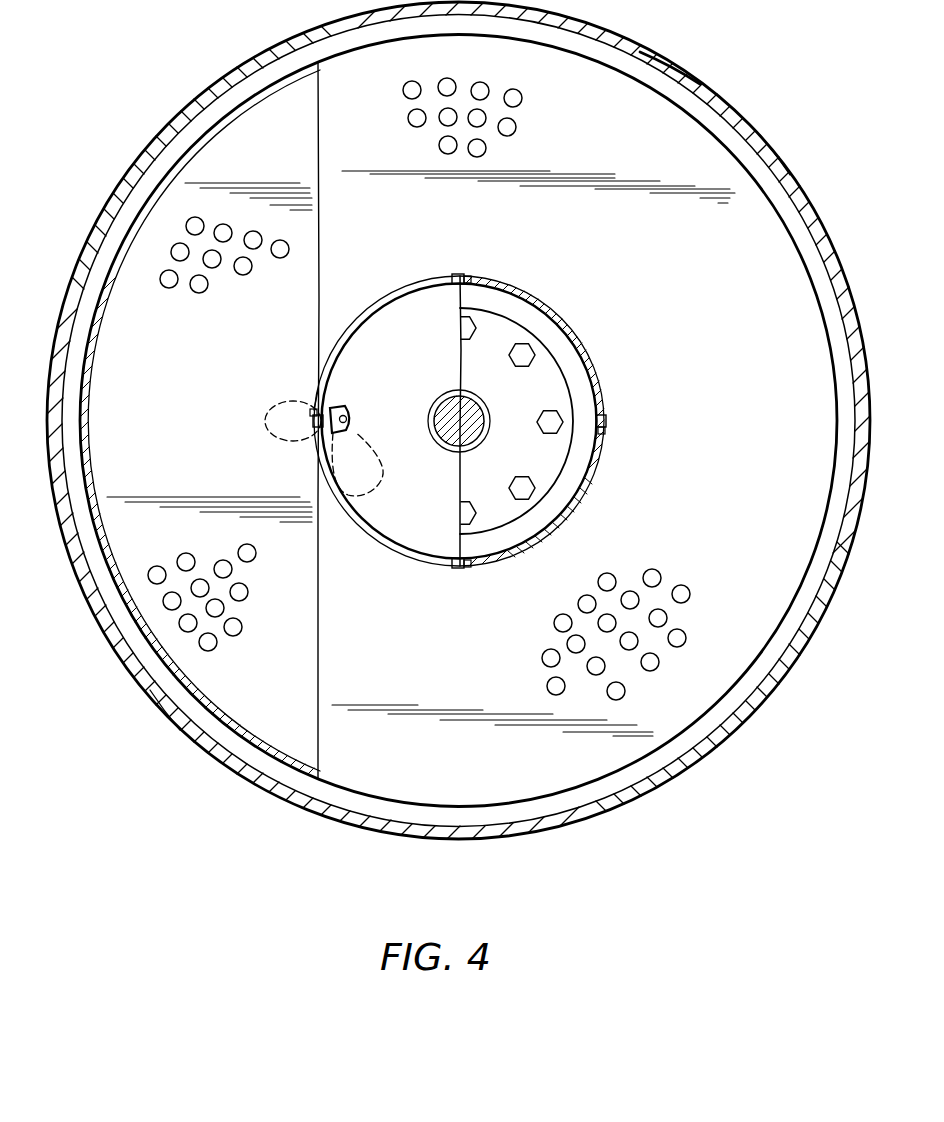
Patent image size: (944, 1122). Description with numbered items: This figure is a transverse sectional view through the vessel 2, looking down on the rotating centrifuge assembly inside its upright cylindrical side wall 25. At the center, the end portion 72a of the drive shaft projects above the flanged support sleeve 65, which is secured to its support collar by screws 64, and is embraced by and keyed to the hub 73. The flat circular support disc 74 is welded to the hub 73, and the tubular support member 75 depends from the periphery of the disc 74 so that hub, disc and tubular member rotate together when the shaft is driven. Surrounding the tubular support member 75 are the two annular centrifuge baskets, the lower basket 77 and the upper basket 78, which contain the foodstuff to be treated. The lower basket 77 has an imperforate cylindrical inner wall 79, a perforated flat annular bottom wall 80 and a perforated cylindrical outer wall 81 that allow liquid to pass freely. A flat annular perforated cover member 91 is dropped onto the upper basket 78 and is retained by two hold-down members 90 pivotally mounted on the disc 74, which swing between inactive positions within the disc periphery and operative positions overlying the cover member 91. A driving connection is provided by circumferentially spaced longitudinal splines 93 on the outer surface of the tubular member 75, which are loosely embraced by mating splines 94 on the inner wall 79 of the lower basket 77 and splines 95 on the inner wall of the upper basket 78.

The vessel 2 is at (755, 130).
The upper basket 78 is at (663, 93).
The lower basket 77 is at (112, 590).
The side wall 25 is at (775, 150).
The outer wall 81 is at (88, 443).
The bottom wall 80 is at (283, 668).
The cover member 91 is at (712, 533).
The tubular support member 75 is at (592, 468).
The support disc 74 is at (404, 371).
The flanged support sleeve 65 is at (524, 468).
The screws 64 is at (535, 355).
The end portion of shaft 72a is at (480, 410).
The hub 73 is at (447, 440).
The splines 93 is at (470, 280).
The splines 95 is at (457, 277).
The inner wall 79 is at (313, 390).
The splines 94 is at (315, 422).
The hold-down members 90 is at (350, 414).